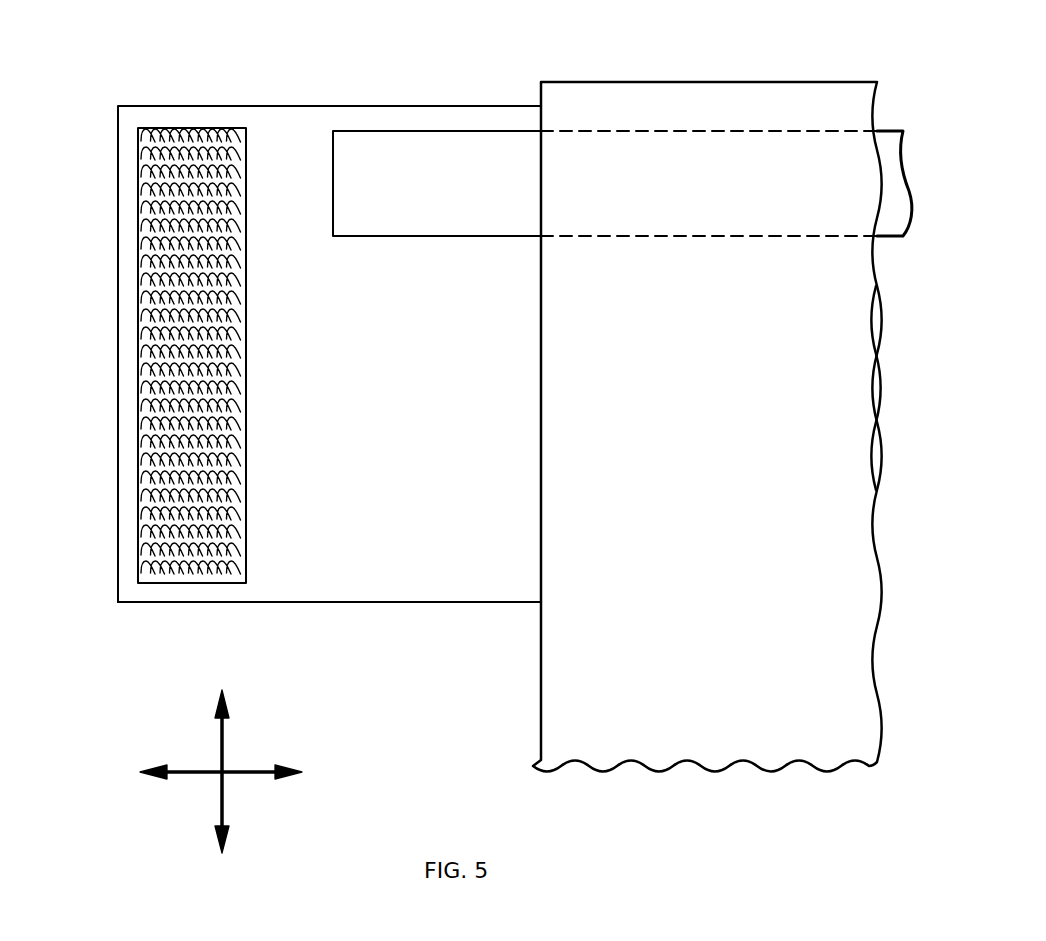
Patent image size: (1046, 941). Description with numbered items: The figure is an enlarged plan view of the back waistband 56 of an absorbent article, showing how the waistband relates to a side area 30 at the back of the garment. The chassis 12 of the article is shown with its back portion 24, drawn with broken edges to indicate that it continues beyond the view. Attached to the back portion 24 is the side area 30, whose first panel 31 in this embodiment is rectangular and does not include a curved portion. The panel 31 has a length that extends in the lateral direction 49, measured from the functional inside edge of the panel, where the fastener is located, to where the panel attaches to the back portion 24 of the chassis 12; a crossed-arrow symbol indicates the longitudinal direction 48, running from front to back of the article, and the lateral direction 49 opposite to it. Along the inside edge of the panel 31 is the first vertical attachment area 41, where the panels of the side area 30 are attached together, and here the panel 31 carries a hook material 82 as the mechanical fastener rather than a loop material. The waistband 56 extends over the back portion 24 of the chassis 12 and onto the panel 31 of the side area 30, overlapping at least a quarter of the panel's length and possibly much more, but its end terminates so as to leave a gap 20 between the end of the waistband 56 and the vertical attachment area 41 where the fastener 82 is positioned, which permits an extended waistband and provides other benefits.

The chassis 12 is at (855, 581).
The gap 20 is at (292, 84).
The back portion 24 is at (858, 419).
The side area 30 is at (360, 130).
The first panel 31 is at (331, 585).
The first vertical attachment area 41 is at (184, 134).
The longitudinal direction 48 is at (226, 740).
The lateral direction 49 is at (204, 769).
The back waistband 56 is at (430, 148).
The hook material 82 is at (146, 380).